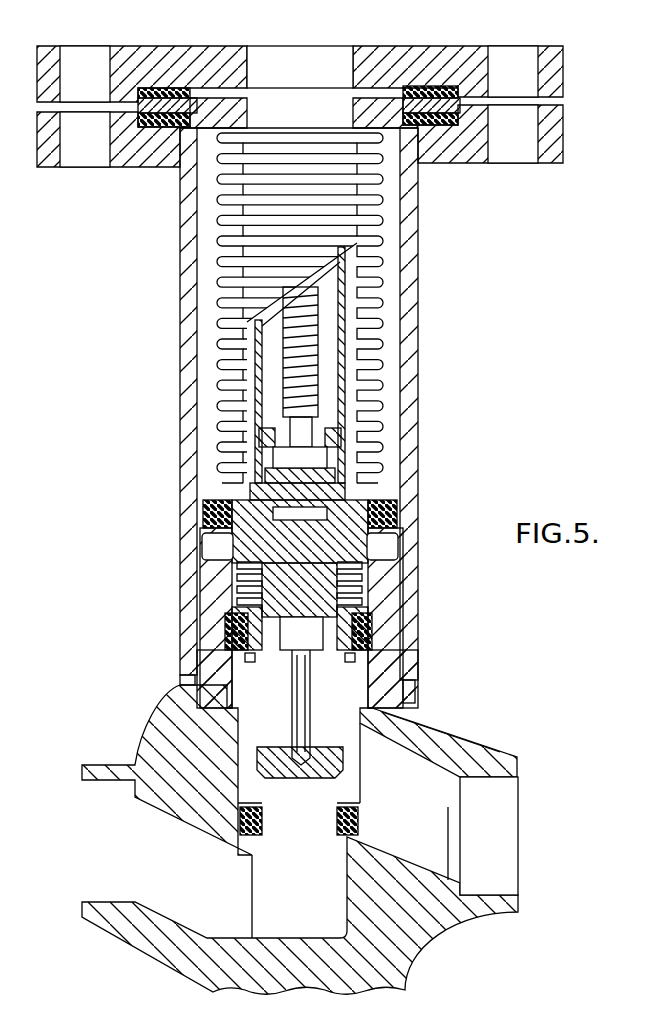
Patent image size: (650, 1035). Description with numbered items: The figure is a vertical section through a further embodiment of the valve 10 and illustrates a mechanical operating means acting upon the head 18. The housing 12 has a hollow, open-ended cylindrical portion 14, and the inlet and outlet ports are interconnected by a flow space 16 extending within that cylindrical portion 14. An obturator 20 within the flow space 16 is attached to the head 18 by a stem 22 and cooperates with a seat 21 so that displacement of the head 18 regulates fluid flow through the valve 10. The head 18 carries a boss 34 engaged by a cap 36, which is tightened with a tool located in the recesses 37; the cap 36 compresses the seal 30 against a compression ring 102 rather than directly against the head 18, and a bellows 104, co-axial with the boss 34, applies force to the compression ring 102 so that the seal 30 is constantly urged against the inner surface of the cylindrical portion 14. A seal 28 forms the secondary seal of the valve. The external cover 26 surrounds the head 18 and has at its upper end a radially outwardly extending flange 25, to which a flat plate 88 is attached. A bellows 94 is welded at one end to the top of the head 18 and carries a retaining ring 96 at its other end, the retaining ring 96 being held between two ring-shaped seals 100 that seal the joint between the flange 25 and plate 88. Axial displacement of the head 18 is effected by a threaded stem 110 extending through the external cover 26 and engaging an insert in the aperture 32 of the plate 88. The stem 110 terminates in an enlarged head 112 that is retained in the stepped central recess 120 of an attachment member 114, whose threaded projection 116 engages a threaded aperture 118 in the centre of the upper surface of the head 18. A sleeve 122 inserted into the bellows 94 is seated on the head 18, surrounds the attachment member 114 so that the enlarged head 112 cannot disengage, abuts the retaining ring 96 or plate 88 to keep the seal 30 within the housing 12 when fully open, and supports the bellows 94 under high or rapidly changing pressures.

The valve 10 is at (506, 972).
The housing 12 is at (500, 762).
The cylindrical portion 14 is at (400, 658).
The flow space 16 is at (385, 718).
The head 18 is at (345, 545).
The obturator 20 is at (270, 762).
The seat 21 is at (240, 833).
The stem 22 is at (293, 718).
The flange 25 is at (450, 157).
The external cover 26 is at (188, 315).
The seal 28 is at (397, 515).
The seal 30 is at (385, 630).
The aperture 32 is at (322, 58).
The boss 34 is at (340, 580).
The cap 36 is at (236, 618).
The recesses 37 is at (247, 658).
The plate 88 is at (423, 60).
The bellows 94 is at (255, 238).
The retaining ring 96 is at (163, 100).
The seal 100 is at (183, 92).
The compression ring 102 is at (370, 603).
The bellows 104 is at (238, 578).
The stem 110 is at (345, 312).
The enlarged head 112 is at (341, 440).
The attachment member 114 is at (327, 458).
The threaded projection 116 is at (250, 490).
The threaded aperture 118 is at (202, 545).
The central recess 120 is at (280, 440).
The sleeve 122 is at (352, 264).